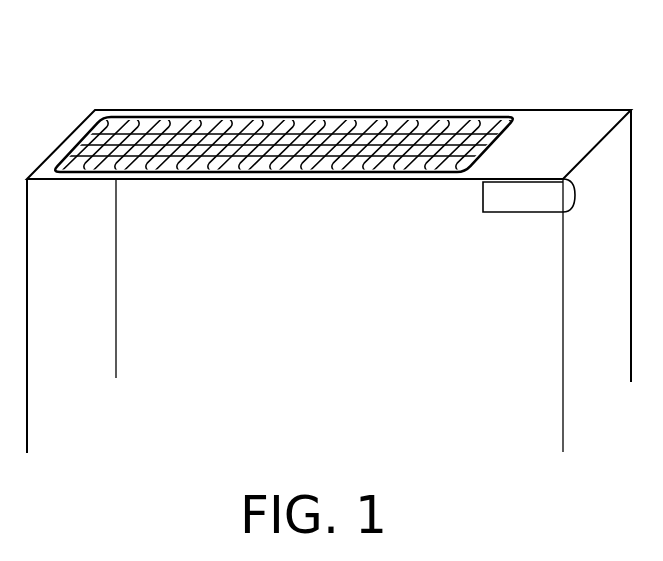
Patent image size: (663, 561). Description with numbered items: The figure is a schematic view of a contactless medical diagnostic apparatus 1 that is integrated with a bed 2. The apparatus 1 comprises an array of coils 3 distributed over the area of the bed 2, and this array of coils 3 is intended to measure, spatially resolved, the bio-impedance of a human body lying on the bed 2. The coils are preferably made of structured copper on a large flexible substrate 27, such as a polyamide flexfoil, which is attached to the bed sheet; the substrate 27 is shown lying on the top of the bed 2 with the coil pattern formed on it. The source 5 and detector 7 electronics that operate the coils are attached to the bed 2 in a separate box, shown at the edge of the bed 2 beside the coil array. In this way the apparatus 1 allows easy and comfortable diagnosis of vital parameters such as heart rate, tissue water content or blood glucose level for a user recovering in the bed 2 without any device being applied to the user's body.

The contactless medical diagnostic apparatus 1 is at (325, 92).
The bed 2 is at (592, 125).
The array of coils 3 is at (482, 147).
The flexible substrate 27 is at (495, 121).
The source 5 is at (505, 213).
The detector 7 is at (529, 195).